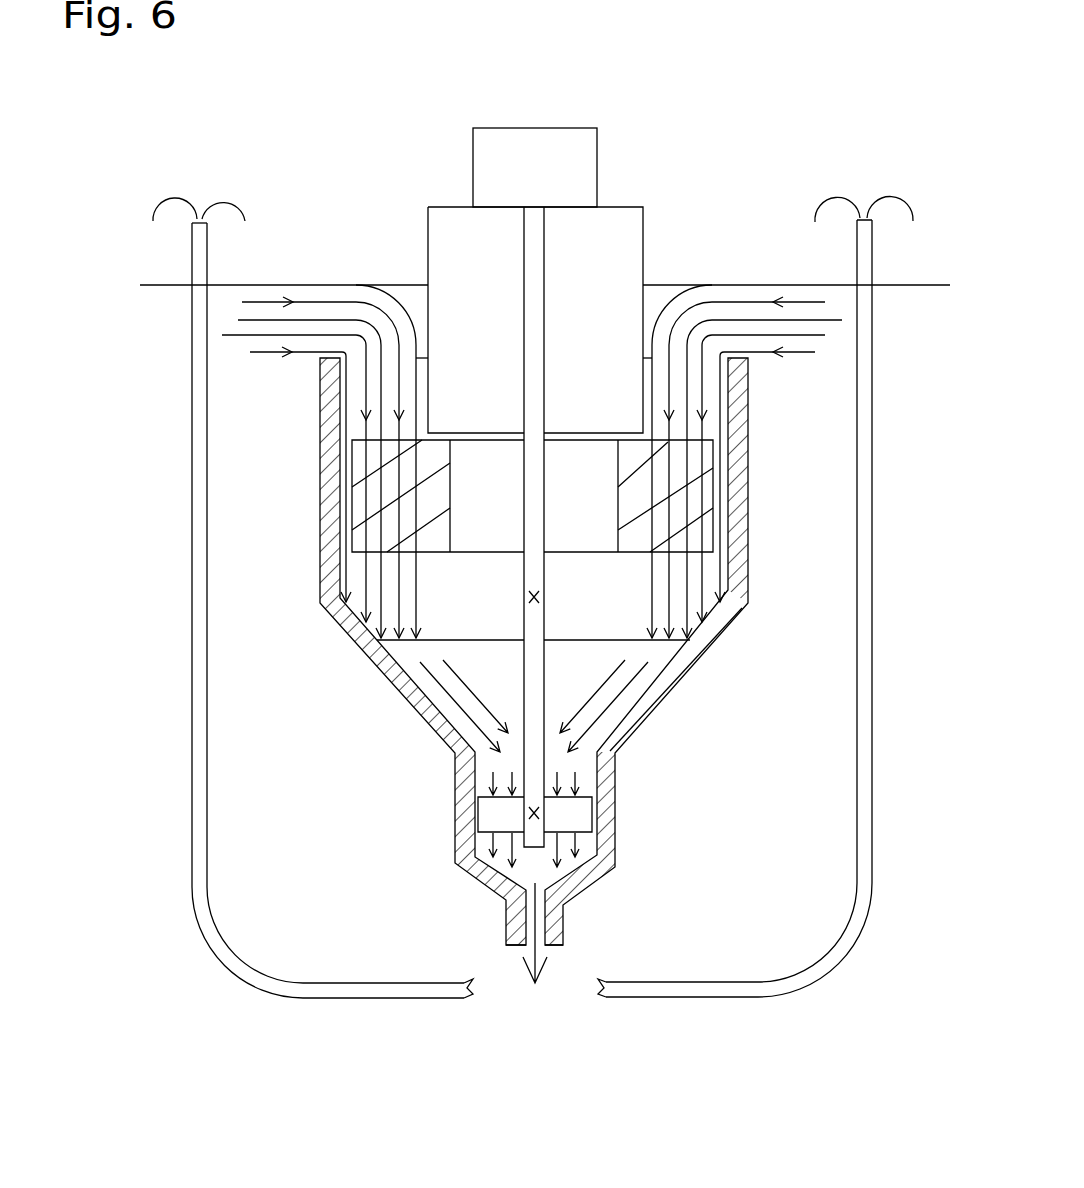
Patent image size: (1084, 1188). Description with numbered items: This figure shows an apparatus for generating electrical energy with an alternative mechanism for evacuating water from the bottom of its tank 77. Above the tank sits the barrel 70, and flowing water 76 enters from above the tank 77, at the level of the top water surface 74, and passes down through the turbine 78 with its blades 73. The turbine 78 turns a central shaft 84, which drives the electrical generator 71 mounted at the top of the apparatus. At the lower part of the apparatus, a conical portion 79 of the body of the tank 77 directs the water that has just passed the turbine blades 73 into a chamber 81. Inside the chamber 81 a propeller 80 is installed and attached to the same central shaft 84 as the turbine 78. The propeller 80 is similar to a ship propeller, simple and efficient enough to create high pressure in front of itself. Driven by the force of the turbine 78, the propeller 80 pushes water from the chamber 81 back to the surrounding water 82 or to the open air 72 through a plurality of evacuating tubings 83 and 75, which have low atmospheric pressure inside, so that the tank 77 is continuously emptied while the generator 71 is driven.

The barrel 70 is at (440, 207).
The electrical generator 71 is at (597, 147).
The open air 72 is at (883, 200).
The turbine blades 73 is at (687, 507).
The top water surface 74 is at (173, 288).
The evacuating tubing 75 is at (191, 453).
The flowing water 76 is at (394, 310).
The tank 77 is at (320, 455).
The turbine 78 is at (443, 553).
The conical portion 79 is at (653, 705).
The propeller 80 is at (500, 813).
The chamber 81 is at (535, 860).
The surrounding water 82 is at (523, 973).
The evacuating tubing 83 is at (600, 988).
The central shaft 84 is at (570, 257).